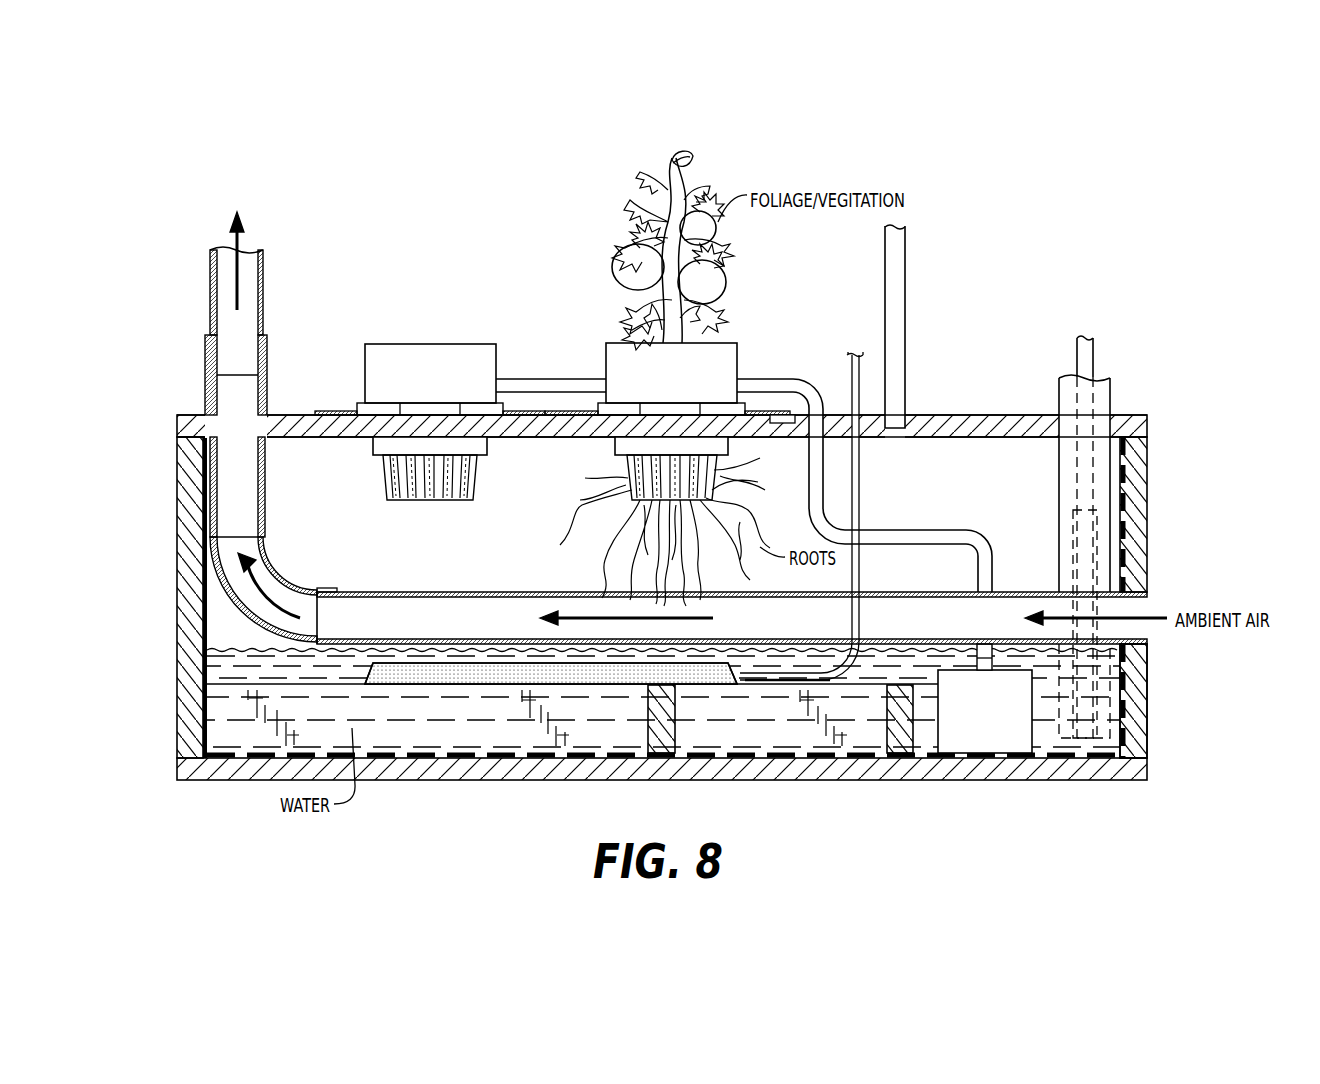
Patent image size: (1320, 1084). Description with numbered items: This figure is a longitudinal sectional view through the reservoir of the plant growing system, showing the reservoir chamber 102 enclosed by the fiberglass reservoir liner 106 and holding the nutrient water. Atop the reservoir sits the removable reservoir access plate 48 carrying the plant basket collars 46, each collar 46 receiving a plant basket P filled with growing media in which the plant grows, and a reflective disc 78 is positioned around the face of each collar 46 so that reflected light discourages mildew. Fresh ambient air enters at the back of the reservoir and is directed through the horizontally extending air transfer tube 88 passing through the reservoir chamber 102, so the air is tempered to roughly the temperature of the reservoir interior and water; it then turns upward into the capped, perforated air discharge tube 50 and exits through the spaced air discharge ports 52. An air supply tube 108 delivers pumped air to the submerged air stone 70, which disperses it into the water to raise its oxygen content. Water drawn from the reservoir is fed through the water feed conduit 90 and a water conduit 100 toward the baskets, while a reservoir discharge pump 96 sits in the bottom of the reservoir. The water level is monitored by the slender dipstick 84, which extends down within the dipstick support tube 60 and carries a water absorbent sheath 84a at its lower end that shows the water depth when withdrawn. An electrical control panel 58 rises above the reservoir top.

The plant basket collar 46 is at (605, 352).
The reservoir access plate 48 is at (550, 412).
The perforated air discharge tube 50 is at (264, 273).
The air discharge port 52 is at (212, 297).
The electrical control panel 58 is at (905, 340).
The dipstick support tube 60 is at (1120, 481).
The air stone 70 is at (464, 665).
The reflective disc 78 is at (767, 412).
The dipstick 84 is at (1094, 355).
The water absorbent sheath 84a is at (1098, 537).
The air transfer tube 88 is at (605, 593).
The water feed conduit 90 is at (939, 530).
The reservoir discharge pump 96 is at (935, 724).
The water conduit 100 is at (532, 380).
The reservoir chamber 102 is at (565, 539).
The reservoir liner 106 is at (1122, 700).
The air supply tube 108 is at (860, 483).
The plant basket P is at (738, 490).